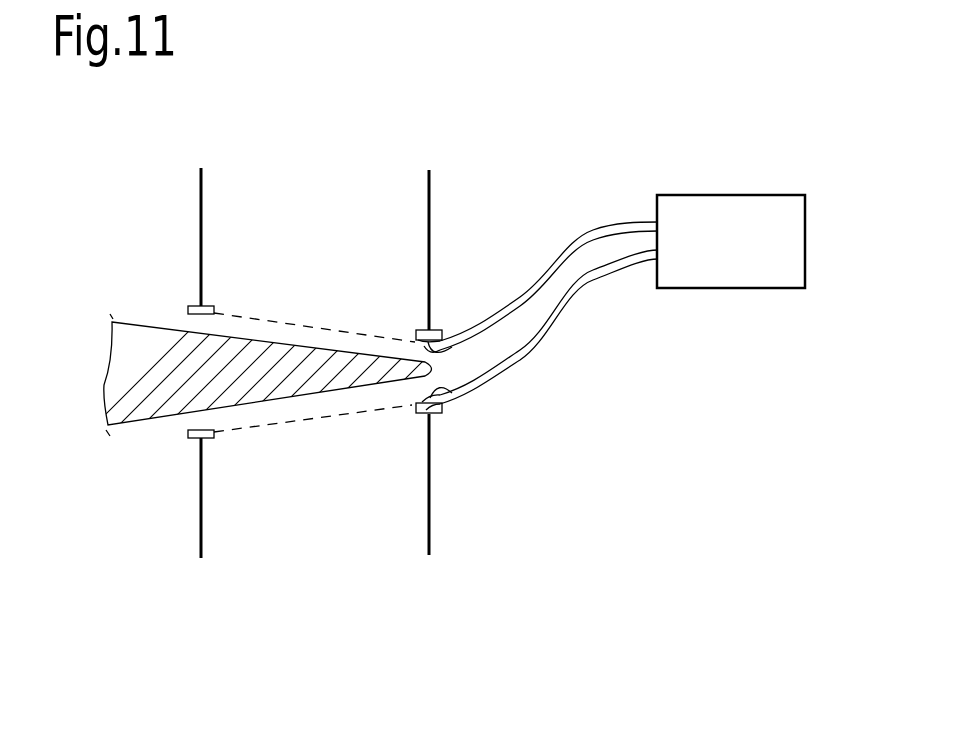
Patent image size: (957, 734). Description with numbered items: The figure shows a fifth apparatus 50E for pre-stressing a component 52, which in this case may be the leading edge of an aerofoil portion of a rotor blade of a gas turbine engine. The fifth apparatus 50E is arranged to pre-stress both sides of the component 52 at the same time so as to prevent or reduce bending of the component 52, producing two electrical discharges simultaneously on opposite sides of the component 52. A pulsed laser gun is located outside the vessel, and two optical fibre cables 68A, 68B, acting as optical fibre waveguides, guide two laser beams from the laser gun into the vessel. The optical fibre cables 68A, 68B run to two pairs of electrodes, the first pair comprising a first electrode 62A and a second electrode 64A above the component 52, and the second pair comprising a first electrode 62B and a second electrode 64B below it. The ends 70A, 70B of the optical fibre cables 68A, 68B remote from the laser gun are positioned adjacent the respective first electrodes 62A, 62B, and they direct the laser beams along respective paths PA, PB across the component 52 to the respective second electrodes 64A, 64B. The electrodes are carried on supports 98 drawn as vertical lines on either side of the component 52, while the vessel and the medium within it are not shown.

The fifth apparatus 50E is at (172, 243).
The component 52 is at (137, 346).
The support rod 98 is at (202, 232).
The second electrode 64A is at (207, 304).
The second electrode 64B is at (205, 440).
The path PA is at (339, 330).
The path PB is at (338, 417).
The first electrode 62A is at (417, 330).
The first electrode 62B is at (417, 417).
The optical fibre cable 68A is at (602, 233).
The optical fibre cable 68B is at (548, 317).
The end of optical fibre cable 70A is at (461, 345).
The end of optical fibre cable 70B is at (447, 400).